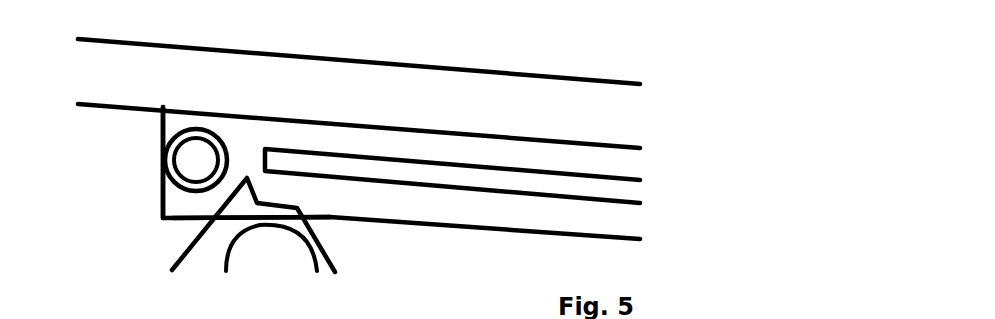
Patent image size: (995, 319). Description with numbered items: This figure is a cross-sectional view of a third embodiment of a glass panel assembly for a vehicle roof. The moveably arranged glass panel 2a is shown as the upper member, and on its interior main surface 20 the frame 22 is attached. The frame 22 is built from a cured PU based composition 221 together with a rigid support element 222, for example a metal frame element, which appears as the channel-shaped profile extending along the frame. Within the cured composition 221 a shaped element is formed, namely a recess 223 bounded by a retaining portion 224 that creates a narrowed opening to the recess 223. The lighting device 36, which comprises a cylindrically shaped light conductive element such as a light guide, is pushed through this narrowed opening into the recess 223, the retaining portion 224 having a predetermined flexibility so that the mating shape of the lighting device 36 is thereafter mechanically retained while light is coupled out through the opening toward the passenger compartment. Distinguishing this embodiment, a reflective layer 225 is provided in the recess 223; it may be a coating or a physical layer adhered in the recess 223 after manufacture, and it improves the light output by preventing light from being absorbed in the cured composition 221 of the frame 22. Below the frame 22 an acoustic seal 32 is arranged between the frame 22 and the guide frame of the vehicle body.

The glass panel 2a is at (572, 117).
The interior main surface 20 is at (110, 113).
The frame 22 is at (457, 236).
The cured PU based composition 221 is at (282, 135).
The rigid support element 222 is at (350, 168).
The recess 223 is at (148, 158).
The retaining portion 224 is at (176, 131).
The reflective layer 225 is at (190, 127).
The acoustic seal 32 is at (208, 258).
The lighting device 36 is at (190, 160).